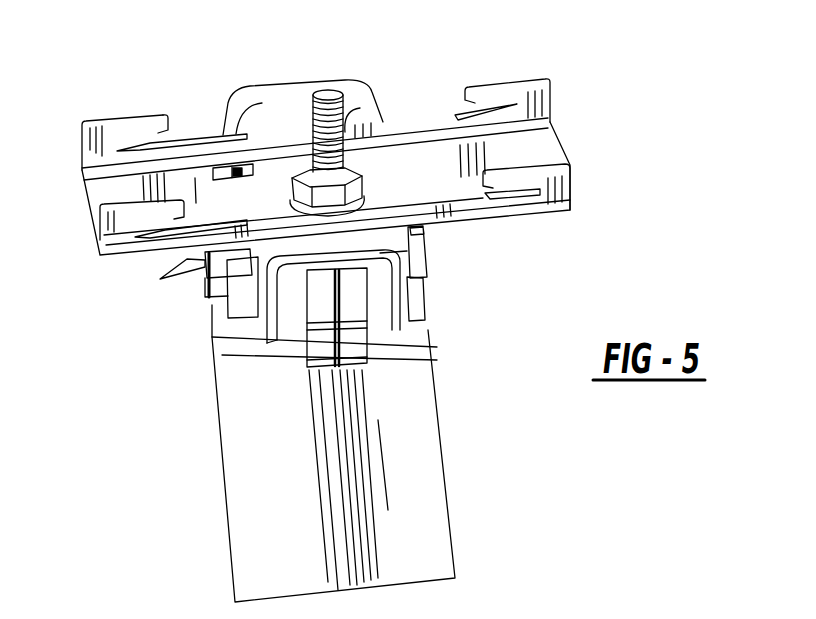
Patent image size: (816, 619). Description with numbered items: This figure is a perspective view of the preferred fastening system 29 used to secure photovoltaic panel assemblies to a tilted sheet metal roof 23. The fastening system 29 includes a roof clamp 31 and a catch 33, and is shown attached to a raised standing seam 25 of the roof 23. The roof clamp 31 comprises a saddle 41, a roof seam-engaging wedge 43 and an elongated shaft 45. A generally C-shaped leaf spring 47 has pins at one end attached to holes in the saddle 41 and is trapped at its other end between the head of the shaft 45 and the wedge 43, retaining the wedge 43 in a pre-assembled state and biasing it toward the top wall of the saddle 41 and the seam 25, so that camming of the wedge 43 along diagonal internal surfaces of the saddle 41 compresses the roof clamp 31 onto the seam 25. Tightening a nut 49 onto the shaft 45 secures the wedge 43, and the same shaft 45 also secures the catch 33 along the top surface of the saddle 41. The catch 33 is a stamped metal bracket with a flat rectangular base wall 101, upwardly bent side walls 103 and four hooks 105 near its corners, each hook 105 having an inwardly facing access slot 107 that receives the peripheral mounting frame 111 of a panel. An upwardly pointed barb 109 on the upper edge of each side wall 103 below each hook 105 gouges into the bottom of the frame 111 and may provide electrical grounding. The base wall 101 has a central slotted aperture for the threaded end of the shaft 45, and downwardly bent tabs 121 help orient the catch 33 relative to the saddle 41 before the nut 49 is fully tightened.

The roof 23 is at (398, 430).
The standing seam 25 is at (217, 282).
The fastening system 29 is at (517, 53).
The roof clamp 31 is at (272, 317).
The catch 33 is at (103, 121).
The saddle 41 is at (405, 295).
The roof seam-engaging wedge 43 is at (242, 300).
The shaft 45 is at (322, 95).
The leaf spring 47 is at (316, 376).
The nut 49 is at (345, 170).
The base wall 101 is at (543, 138).
The side wall 103 is at (405, 128).
The hook 105 is at (150, 132).
The access slot 107 is at (175, 132).
The barb 109 is at (502, 195).
The mounting frame 111 is at (695, 617).
The tab 121 is at (248, 172).